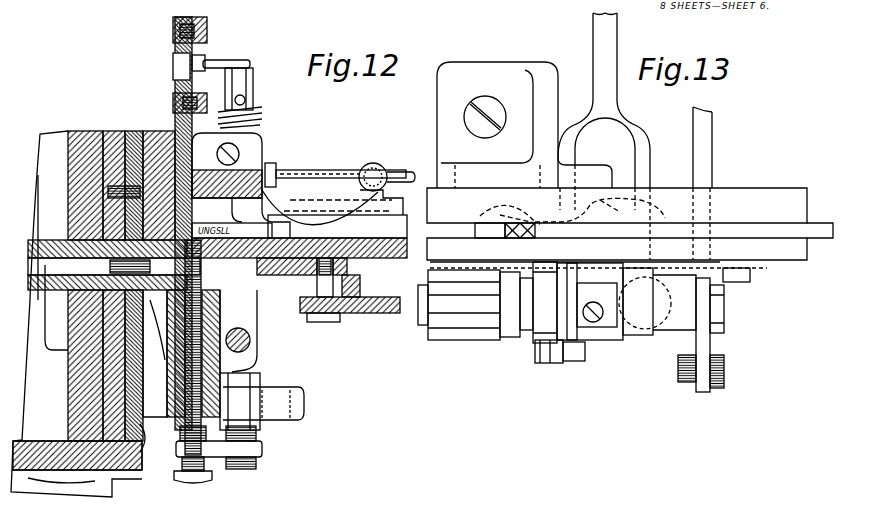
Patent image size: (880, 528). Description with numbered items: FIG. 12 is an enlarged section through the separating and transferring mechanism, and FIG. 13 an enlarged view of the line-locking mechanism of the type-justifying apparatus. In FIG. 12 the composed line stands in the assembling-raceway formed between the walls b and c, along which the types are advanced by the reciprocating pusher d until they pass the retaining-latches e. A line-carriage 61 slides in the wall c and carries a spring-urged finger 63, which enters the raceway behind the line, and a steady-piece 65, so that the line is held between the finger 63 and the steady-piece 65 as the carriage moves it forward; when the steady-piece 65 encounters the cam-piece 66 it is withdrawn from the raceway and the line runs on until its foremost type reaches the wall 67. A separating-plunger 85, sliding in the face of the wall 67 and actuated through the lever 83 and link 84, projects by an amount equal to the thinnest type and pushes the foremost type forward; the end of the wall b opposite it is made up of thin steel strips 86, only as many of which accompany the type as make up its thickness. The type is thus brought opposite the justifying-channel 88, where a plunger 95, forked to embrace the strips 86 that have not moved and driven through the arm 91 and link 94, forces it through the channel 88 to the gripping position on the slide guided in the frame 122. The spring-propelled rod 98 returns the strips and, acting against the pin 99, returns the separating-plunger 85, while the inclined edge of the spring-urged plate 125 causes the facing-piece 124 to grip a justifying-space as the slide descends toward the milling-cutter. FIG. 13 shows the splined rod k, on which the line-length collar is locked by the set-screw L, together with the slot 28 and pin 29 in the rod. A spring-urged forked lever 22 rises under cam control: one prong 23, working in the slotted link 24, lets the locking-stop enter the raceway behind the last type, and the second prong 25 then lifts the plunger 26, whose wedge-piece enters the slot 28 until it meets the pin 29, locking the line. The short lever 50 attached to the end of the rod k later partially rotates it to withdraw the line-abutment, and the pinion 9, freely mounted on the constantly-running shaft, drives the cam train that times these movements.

In FIG. 12, the frame 122 is at (76, 314).
In FIG. 12, the spring-urged plate 125 is at (131, 142).
In FIG. 12, the facing-piece 124 is at (103, 412).
In FIG. 12, the plunger 26 is at (166, 272).
In FIG. 12, the wall 67 is at (156, 150).
In FIG. 12, the separating-plunger 85 is at (178, 114).
In FIG. 12, the lever 83 is at (180, 29).
In FIG. 12, the link 84 is at (208, 62).
In FIG. 12, the pin 99 is at (226, 53).
In FIG. 12, the spring-propelled rod 98 is at (253, 82).
In FIG. 12, the steady-piece 65 is at (274, 167).
In FIG. 12, the cam-piece 66 is at (333, 173).
In FIG. 12, the spring-urged finger 63 is at (371, 165).
In FIG. 12, the line-carriage 61 is at (347, 214).
In FIG. 12, the wall b is at (307, 249).
In FIG. 13, the wall b is at (617, 250).
In FIG. 12, the plunger 95 is at (350, 268).
In FIG. 12, the link 94 is at (356, 313).
In FIG. 12, the justifying-channel 88 is at (208, 284).
In FIG. 12, the thin steel strips 86 is at (183, 426).
In FIG. 12, the arm 91 is at (208, 459).
In FIG. 13, the spring-urged forked lever 22 is at (596, 70).
In FIG. 13, the prong 23 is at (572, 148).
In FIG. 13, the second prong 25 is at (650, 172).
In FIG. 13, the wall c is at (617, 205).
In FIG. 13, the reciprocating pusher d is at (832, 233).
In FIG. 13, the retaining-latches e is at (572, 211).
In FIG. 13, the pinion 9 is at (487, 318).
In FIG. 13, the set-screw L is at (553, 282).
In FIG. 13, the slotted link 24 is at (562, 362).
In FIG. 13, the slot 28 is at (633, 338).
In FIG. 13, the pin 29 is at (667, 335).
In FIG. 13, the splined rod k is at (718, 305).
In FIG. 13, the short lever 50 is at (707, 338).